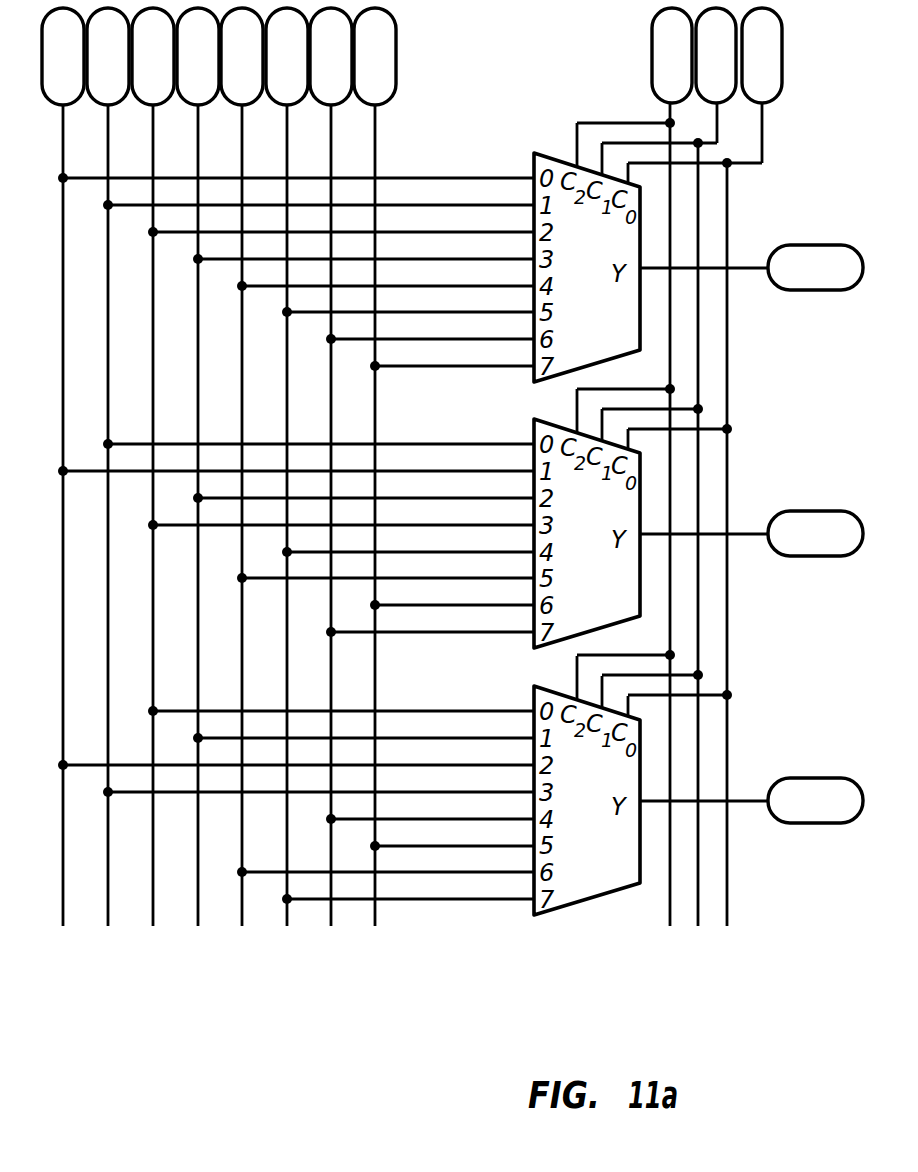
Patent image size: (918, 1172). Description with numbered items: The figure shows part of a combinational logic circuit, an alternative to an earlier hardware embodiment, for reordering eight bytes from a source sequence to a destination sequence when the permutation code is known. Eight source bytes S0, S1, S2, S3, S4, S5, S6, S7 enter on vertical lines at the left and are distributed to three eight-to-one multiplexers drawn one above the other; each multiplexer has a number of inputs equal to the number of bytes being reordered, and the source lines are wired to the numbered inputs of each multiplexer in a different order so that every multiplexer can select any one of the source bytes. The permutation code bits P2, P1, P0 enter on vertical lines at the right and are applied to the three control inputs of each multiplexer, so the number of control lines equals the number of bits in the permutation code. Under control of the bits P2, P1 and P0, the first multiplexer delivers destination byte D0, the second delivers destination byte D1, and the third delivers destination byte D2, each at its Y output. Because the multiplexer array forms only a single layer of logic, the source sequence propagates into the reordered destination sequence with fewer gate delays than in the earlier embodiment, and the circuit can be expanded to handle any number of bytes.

The source byte S0 is at (63, 56).
The source byte S1 is at (108, 56).
The source byte S2 is at (153, 56).
The source byte S3 is at (198, 56).
The source byte S4 is at (242, 56).
The source byte S5 is at (287, 56).
The source byte S6 is at (331, 56).
The source byte S7 is at (375, 56).
The permutation code bit P2 is at (672, 55).
The permutation code bit P1 is at (716, 55).
The permutation code bit P0 is at (762, 55).
The destination byte D0 is at (815, 267).
The destination byte D1 is at (815, 533).
The destination byte D2 is at (815, 800).